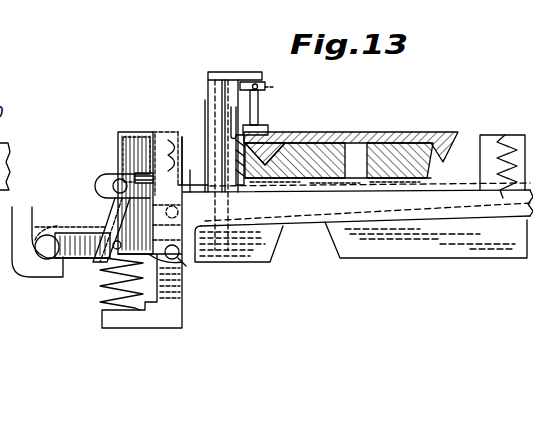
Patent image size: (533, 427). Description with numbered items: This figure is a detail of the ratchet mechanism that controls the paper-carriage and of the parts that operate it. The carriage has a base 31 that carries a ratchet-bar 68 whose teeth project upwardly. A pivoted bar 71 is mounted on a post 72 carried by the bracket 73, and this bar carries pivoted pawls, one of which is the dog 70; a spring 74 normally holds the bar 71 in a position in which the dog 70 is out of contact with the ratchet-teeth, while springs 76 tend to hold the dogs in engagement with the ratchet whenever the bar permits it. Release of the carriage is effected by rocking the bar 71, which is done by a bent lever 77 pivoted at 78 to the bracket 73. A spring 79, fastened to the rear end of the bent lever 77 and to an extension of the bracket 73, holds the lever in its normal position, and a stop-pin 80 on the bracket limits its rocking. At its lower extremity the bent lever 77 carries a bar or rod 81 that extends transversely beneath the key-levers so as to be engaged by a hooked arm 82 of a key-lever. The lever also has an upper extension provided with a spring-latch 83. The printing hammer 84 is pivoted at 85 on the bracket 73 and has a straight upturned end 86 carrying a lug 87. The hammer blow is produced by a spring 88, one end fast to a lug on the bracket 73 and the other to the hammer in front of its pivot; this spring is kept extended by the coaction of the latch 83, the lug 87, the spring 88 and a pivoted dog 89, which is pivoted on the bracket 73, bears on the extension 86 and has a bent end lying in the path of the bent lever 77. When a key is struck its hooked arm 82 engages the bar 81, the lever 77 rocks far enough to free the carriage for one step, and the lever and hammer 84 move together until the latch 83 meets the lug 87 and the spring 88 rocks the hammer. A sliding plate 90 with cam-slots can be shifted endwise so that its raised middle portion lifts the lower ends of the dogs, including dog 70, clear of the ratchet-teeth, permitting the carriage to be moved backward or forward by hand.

The base 31 is at (358, 133).
The ratchet-bar 68 is at (268, 128).
The dog 70 is at (261, 121).
The bar 71 is at (262, 88).
The post 72 is at (236, 108).
The bracket 73 is at (170, 295).
The spring 74 is at (231, 107).
The spring 76 is at (259, 100).
The bent lever 77 is at (212, 92).
The pivot 78 is at (176, 221).
The spring 79 is at (110, 290).
The stop-pin 80 is at (185, 266).
The bar or rod 81 is at (46, 251).
The hooked arm 82 is at (20, 260).
The spring-latch 83 is at (162, 131).
The hammer 84 is at (389, 217).
The pivot 85 is at (179, 260).
The upturned end 86 is at (172, 160).
The lug 87 is at (204, 130).
The spring 88 is at (494, 163).
The pivoted dog 89 is at (108, 212).
The sliding plate 90 is at (244, 157).